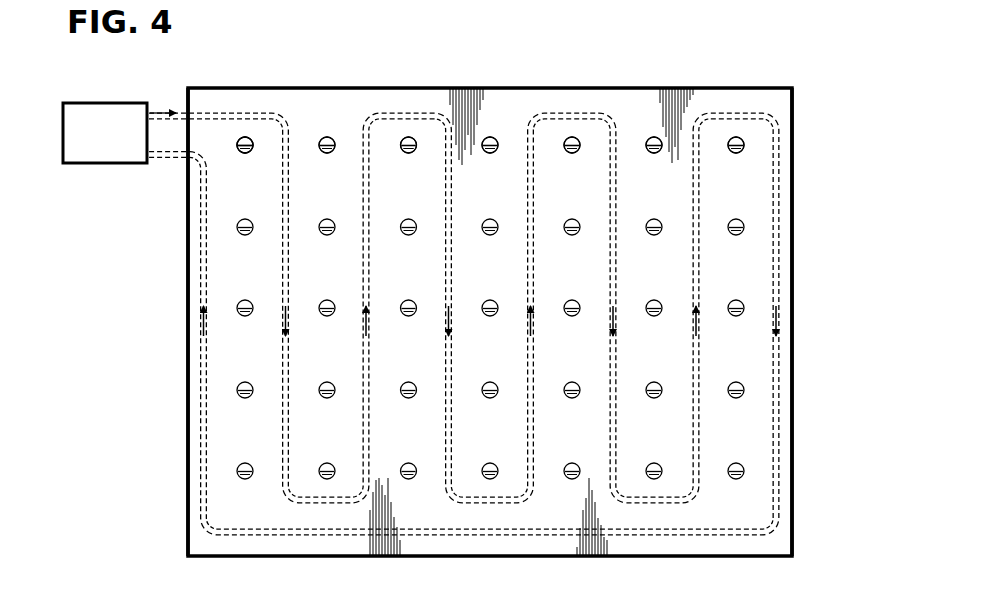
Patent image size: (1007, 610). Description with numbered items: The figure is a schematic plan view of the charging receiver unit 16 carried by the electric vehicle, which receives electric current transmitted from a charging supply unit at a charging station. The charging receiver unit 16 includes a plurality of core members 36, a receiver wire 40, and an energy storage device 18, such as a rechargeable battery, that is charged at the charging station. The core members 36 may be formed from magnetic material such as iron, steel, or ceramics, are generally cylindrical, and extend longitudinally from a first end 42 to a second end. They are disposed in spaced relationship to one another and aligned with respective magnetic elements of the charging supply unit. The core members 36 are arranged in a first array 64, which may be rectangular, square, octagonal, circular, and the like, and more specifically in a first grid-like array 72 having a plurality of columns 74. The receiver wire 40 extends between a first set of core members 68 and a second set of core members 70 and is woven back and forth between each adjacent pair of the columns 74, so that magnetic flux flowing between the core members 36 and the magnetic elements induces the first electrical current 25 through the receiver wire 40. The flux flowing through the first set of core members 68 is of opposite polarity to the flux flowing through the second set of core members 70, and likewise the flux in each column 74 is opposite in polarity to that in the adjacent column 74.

The charging receiver unit 16 is at (806, 98).
The energy storage device 18 is at (105, 133).
The first electrical current 25 is at (203, 320).
The core members 36 is at (327, 479).
The receiver wire 40 is at (196, 252).
The first end 42 is at (252, 146).
The first array 64 is at (180, 423).
The first set of core members 68 is at (240, 133).
The second set of core members 70 is at (323, 133).
The first grid-like array 72 is at (797, 221).
The columns 74 is at (231, 508).